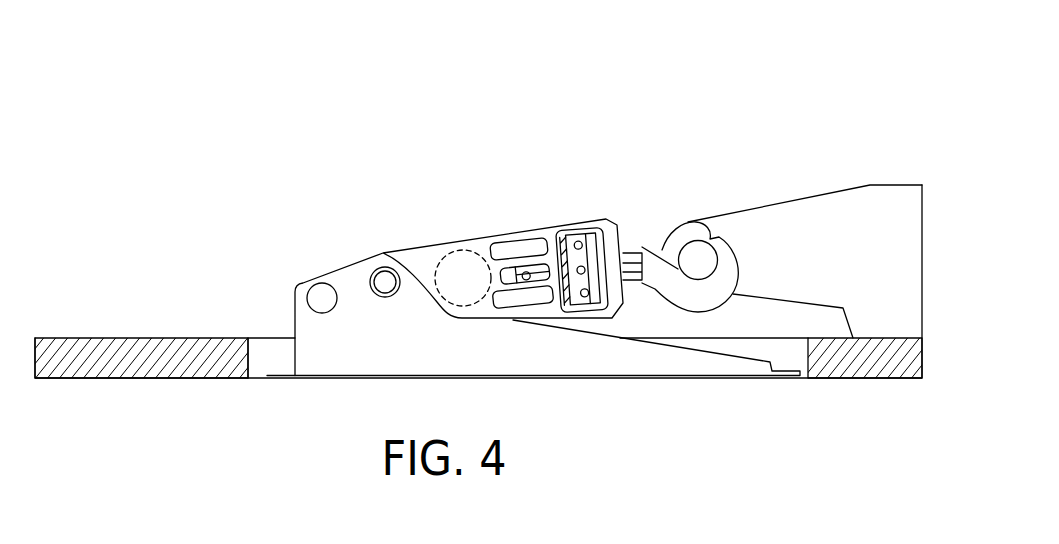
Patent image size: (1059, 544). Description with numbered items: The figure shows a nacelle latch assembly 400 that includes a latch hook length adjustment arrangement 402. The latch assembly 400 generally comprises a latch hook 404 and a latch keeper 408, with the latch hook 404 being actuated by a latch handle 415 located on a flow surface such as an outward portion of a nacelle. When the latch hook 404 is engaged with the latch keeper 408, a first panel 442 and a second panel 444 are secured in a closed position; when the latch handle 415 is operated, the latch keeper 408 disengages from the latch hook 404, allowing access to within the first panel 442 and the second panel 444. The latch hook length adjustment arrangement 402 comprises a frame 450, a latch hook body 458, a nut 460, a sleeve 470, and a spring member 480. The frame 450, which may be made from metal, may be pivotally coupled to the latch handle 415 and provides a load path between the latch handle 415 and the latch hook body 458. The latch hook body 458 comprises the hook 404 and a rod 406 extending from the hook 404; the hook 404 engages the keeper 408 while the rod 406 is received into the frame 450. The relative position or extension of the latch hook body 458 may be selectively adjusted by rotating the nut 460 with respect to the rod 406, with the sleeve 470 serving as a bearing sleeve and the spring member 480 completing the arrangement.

The latch assembly 400 is at (740, 95).
The latch hook length adjustment arrangement 402 is at (518, 152).
The latch hook 404 is at (708, 303).
The rod 406 is at (625, 250).
The latch keeper 408 is at (695, 240).
The latch handle 415 is at (597, 378).
The first panel 442 is at (130, 370).
The second panel 444 is at (900, 367).
The frame 450 is at (463, 238).
The latch hook body 458 is at (642, 310).
The nut 460 is at (578, 233).
The sleeve 470 is at (600, 228).
The spring member 480 is at (557, 233).